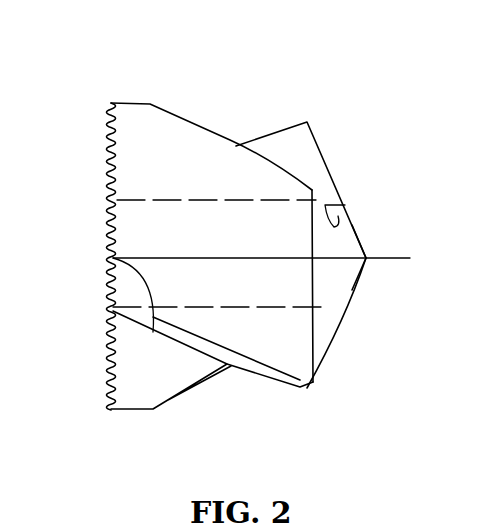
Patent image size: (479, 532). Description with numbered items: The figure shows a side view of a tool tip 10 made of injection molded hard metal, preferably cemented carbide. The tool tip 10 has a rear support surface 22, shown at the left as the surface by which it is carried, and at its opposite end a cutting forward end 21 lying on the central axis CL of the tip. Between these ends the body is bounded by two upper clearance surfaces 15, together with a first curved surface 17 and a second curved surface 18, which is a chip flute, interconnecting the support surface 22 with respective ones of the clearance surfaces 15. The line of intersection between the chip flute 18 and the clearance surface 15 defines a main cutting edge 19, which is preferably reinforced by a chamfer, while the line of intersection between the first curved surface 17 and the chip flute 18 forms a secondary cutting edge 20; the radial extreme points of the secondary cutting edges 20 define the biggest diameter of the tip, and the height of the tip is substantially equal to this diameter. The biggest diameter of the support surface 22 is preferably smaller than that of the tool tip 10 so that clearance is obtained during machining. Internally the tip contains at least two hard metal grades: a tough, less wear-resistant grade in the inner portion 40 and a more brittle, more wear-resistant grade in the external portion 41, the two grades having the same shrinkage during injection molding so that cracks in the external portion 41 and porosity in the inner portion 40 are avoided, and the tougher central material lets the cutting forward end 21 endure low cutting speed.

The tool tip 10 is at (238, 256).
The upper clearance surface 15 is at (333, 286).
The first curved surface 17 is at (200, 182).
The second curved surface (chip flute) 18 is at (151, 370).
The main cutting edge 19 is at (328, 345).
The secondary cutting edge 20 is at (280, 388).
The cutting forward end 21 is at (366, 258).
The support surface 22 is at (108, 186).
The inner portion 40 is at (170, 200).
The external portion 41 is at (230, 170).
The central axis CL is at (388, 262).